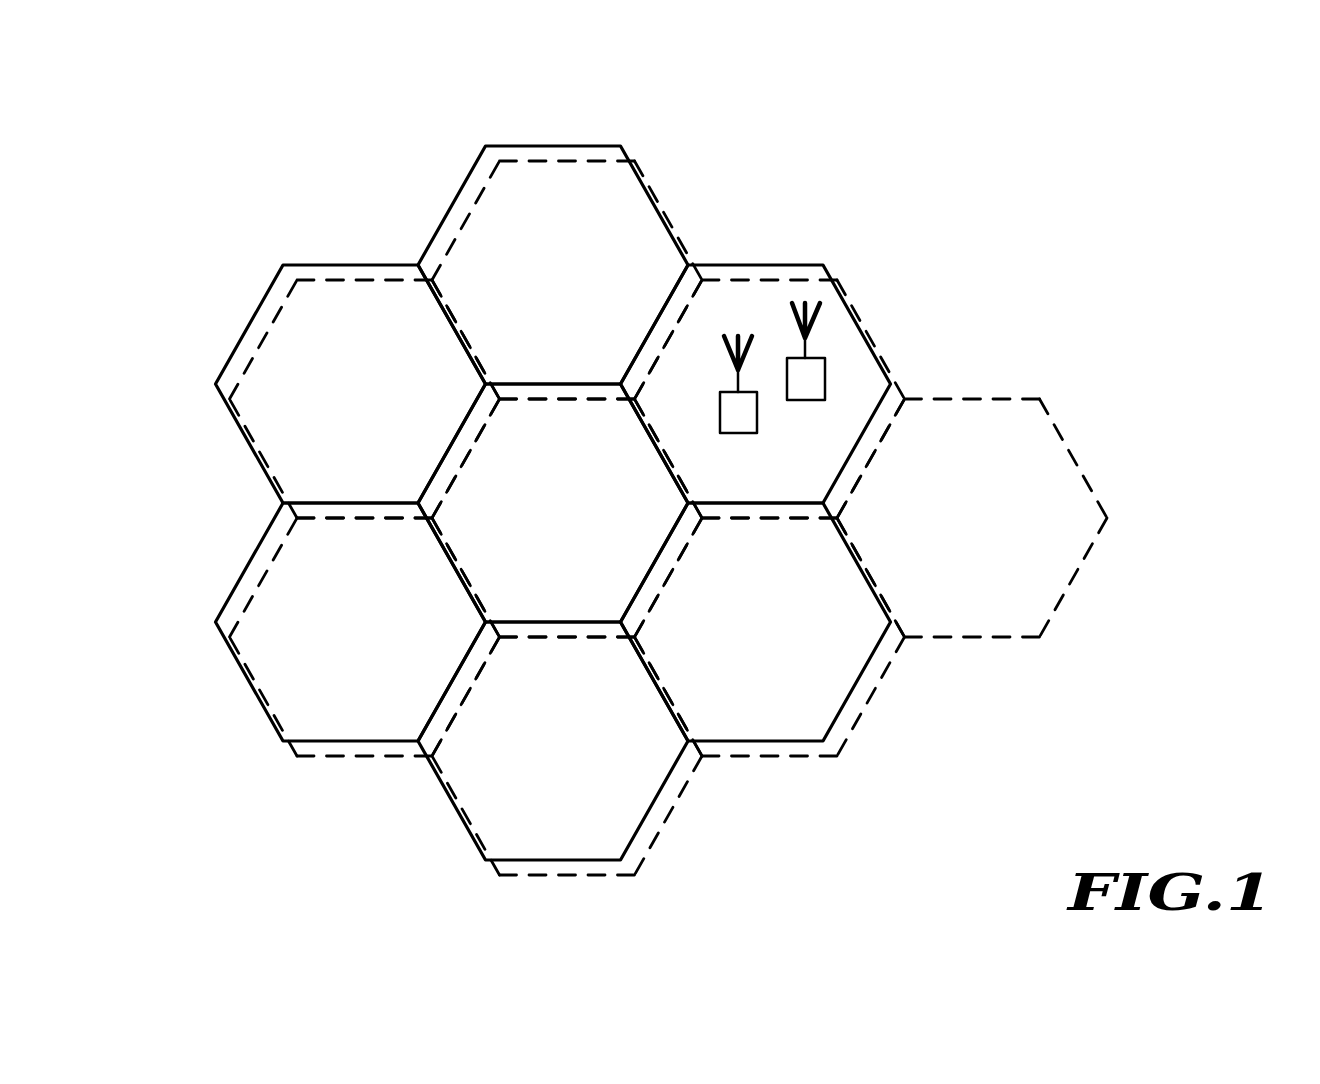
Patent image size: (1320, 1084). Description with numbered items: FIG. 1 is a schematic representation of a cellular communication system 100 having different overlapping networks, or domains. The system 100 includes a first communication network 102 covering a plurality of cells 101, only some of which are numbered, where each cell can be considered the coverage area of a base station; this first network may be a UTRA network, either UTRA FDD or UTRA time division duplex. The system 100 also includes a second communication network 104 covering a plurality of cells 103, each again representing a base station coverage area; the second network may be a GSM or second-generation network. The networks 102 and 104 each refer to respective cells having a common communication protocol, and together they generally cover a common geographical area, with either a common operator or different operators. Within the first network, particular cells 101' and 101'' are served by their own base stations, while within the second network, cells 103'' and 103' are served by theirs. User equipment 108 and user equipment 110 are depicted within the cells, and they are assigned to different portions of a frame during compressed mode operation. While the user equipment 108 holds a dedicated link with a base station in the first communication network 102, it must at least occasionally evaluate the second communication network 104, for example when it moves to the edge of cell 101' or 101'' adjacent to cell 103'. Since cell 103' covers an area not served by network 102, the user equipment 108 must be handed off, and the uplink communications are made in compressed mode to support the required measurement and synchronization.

The cellular communication system 100 is at (244, 166).
The cells 101 is at (448, 491).
The cell 101' is at (782, 384).
The cell 101'' is at (784, 626).
The first communication network 102 is at (488, 136).
The cells 103 is at (567, 518).
The cell 103' is at (995, 518).
The cell 103'' is at (774, 382).
The second communication network 104 is at (1104, 462).
The user equipment 108 is at (740, 433).
The user equipment 110 is at (806, 400).